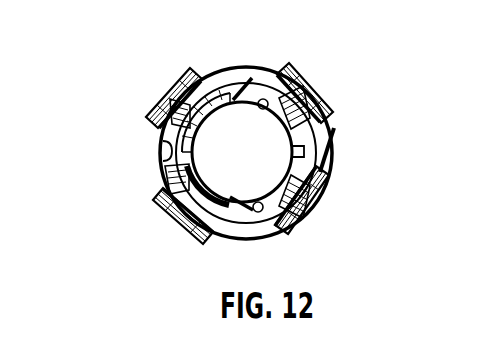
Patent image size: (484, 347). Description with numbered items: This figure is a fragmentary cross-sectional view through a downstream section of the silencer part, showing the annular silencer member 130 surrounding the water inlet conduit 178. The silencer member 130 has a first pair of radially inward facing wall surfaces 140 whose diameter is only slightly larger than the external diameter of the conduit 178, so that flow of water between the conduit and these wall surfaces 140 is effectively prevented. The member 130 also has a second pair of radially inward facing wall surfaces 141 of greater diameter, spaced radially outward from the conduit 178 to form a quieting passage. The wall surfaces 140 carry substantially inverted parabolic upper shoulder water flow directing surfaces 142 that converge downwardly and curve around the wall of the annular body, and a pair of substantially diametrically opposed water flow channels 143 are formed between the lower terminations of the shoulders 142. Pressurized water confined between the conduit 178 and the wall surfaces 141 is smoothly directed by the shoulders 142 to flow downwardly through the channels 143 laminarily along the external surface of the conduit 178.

The silencer member 130 is at (323, 107).
The first pair of radially inward facing wall surfaces 140 is at (263, 110).
The second pair of radially inward facing wall surfaces 141 is at (163, 136).
The upper shoulder water flow directing surfaces 142 is at (173, 105).
The water flow channels 143 is at (158, 168).
The water inlet conduit 178 is at (210, 137).